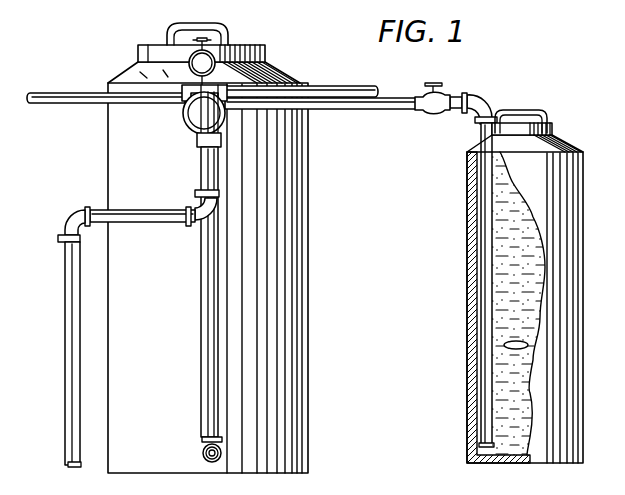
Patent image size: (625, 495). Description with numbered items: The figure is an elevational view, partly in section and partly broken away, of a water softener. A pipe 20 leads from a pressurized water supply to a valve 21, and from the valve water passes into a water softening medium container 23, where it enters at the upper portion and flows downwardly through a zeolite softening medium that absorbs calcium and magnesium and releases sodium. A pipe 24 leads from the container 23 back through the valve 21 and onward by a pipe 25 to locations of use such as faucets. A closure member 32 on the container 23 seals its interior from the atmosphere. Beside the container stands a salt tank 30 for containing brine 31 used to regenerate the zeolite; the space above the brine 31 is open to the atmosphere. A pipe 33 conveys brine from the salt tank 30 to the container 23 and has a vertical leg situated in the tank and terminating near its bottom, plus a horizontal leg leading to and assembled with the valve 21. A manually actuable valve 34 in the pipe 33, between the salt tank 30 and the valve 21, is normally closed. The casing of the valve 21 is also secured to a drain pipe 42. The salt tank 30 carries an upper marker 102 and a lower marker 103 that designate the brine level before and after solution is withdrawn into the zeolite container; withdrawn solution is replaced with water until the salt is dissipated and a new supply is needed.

The pipe 20 is at (333, 87).
The valve 21 is at (177, 133).
The water softening medium container 23 is at (308, 277).
The pipe 24 is at (208, 349).
The pipe 25 is at (68, 92).
The salt tank 30 is at (578, 323).
The brine 31 is at (470, 375).
The closure member 32 is at (251, 45).
The pipe 33 is at (393, 110).
The manually actuable valve 34 is at (441, 96).
The drain pipe 42 is at (68, 386).
The upper marker 102 is at (494, 181).
The lower marker 103 is at (492, 343).